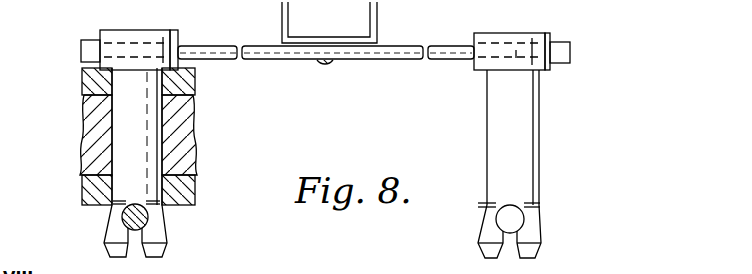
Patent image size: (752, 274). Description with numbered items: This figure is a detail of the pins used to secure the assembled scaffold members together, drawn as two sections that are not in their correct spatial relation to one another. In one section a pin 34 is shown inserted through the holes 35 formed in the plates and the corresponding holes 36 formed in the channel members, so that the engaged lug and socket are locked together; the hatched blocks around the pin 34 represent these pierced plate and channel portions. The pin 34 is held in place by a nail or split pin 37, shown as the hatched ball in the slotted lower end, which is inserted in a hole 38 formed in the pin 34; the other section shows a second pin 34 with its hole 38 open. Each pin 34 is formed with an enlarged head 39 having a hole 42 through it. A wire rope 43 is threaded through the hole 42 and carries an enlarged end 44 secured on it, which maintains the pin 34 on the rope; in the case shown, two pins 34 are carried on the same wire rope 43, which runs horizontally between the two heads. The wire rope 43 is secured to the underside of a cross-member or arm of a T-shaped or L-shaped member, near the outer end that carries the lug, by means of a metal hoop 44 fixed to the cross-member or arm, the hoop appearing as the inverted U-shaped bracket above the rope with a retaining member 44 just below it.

The pin 34 is at (135, 162).
The holes formed in the plates 35 is at (195, 133).
The holes formed in the channel members 36 is at (195, 82).
The split pin 37 is at (127, 217).
The hole formed in the pin 38 is at (515, 219).
The enlarged head 39 is at (113, 30).
The hole 42 is at (165, 40).
The wire rope 43 is at (270, 50).
The enlarged end 44 is at (81, 43).